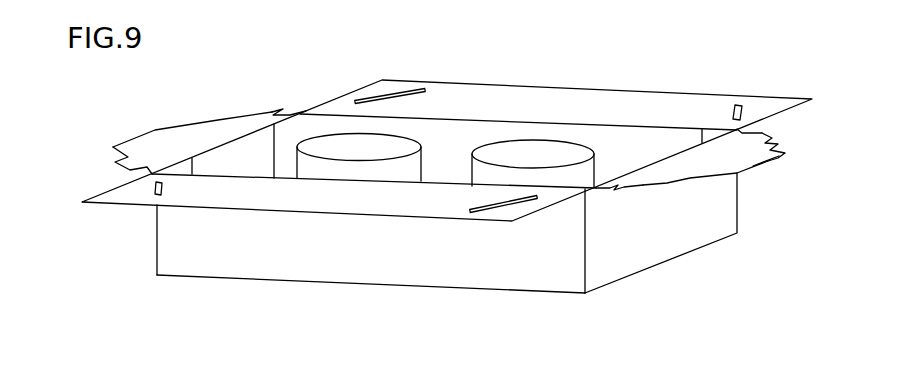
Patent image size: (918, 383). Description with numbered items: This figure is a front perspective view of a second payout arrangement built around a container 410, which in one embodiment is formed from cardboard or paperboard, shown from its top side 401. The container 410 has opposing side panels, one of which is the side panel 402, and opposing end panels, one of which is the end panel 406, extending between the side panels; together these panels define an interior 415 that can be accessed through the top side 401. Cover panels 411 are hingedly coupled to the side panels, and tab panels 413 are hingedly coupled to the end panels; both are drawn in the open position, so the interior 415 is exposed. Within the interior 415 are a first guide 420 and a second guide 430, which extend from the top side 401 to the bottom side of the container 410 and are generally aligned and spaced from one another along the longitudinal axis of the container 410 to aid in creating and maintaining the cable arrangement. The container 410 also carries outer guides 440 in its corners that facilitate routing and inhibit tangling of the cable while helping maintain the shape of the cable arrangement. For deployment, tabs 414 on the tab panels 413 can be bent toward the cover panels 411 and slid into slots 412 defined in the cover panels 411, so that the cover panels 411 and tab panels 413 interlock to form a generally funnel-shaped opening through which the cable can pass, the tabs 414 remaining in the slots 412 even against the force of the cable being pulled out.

The top side 401 is at (656, 65).
The side panel 402 is at (532, 258).
The end panel 406 is at (690, 237).
The container 410 is at (227, 277).
The cover panel 411 is at (588, 110).
The slot 412 is at (740, 108).
The tab panel 413 is at (155, 138).
The tab 414 is at (245, 115).
The interior 415 is at (467, 140).
The first guide 420 is at (340, 158).
The second guide 430 is at (512, 166).
The outer guide 440 is at (303, 115).